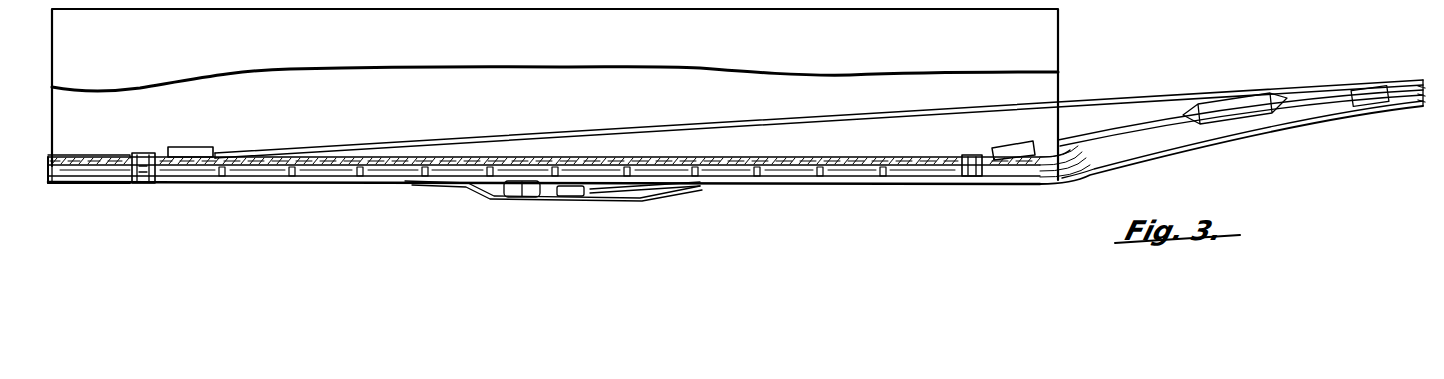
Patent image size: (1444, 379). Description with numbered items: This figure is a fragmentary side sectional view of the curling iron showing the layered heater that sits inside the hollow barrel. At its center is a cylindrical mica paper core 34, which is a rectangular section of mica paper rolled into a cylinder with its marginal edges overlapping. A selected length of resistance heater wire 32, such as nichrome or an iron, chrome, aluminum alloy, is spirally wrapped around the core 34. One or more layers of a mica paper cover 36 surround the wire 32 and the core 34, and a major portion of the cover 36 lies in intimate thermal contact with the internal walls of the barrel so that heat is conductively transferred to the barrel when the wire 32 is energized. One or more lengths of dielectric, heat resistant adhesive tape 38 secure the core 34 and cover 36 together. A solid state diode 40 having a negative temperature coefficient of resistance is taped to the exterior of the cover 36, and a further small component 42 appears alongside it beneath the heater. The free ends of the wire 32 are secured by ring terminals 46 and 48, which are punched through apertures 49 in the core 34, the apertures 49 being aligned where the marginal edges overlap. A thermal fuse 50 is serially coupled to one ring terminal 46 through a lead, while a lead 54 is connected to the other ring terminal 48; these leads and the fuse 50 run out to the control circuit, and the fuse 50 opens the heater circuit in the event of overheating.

The resistance heater wire 32 is at (437, 160).
The mica paper core 34 is at (282, 158).
The mica paper cover 36 is at (343, 185).
The adhesive tape 38 is at (52, 172).
The solid state diode 40 is at (522, 191).
The block 42 is at (638, 199).
The ring terminal 46 is at (987, 152).
The ring terminal 48 is at (131, 157).
The apertures 49 is at (141, 173).
The thermal fuse 50 is at (1230, 123).
The lead 54 is at (1350, 82).